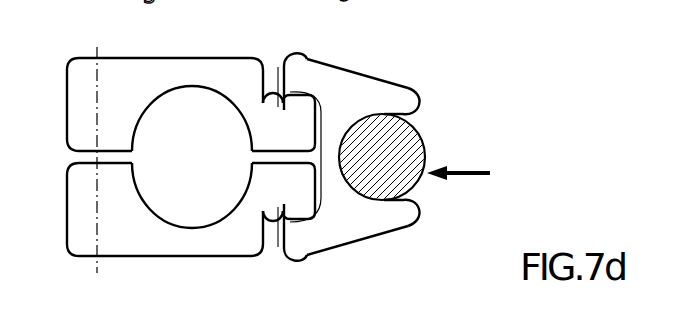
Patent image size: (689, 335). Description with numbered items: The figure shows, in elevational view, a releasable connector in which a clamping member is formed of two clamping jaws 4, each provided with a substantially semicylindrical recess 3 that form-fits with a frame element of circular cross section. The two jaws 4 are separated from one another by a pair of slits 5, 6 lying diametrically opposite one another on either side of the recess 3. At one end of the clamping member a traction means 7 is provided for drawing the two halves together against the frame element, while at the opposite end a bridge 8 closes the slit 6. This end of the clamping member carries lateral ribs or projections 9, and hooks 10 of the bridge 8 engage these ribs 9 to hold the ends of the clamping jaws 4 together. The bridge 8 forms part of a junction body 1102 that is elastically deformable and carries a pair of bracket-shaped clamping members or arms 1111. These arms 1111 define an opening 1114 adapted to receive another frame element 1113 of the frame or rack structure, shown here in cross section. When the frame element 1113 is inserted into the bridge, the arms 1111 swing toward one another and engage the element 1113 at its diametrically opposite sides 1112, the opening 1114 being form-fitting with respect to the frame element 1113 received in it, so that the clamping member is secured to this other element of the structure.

The semicylindrical recess 3 is at (183, 75).
The clamping jaws 4 is at (115, 117).
The slit 5 is at (92, 157).
The slit 6 is at (267, 180).
The traction means 7 is at (97, 77).
The bridge 8 is at (403, 171).
The ribs 9 is at (304, 115).
The hooks 10 is at (290, 76).
The junction body 1102 is at (436, 88).
The clamping members 1111 is at (363, 95).
The diametrically opposite sides 1112 is at (387, 97).
The frame element 1113 is at (423, 137).
The opening 1114 is at (481, 177).